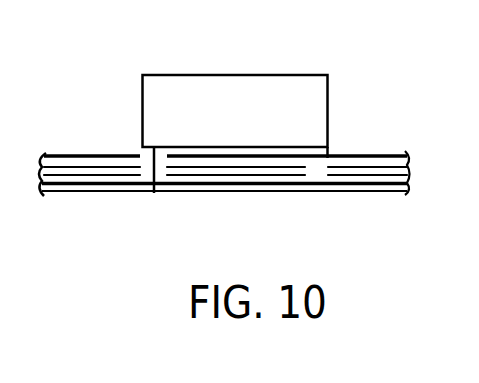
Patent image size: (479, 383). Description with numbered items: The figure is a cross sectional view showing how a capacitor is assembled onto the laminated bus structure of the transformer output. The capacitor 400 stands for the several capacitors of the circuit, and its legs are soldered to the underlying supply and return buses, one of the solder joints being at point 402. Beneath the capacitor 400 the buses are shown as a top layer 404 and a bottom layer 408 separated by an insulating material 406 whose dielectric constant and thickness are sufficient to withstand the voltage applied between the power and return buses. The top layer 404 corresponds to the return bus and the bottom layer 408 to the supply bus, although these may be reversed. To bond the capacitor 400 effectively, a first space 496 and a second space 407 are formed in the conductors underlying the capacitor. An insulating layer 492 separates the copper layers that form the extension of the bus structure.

The capacitor 400 is at (322, 86).
The bonding point 402 is at (330, 150).
The top layer 404 is at (364, 146).
The insulating material 406 is at (382, 190).
The second space 407 is at (305, 196).
The bottom layer 408 is at (348, 196).
The insulating layer 492 is at (152, 200).
The first space 496 is at (131, 148).